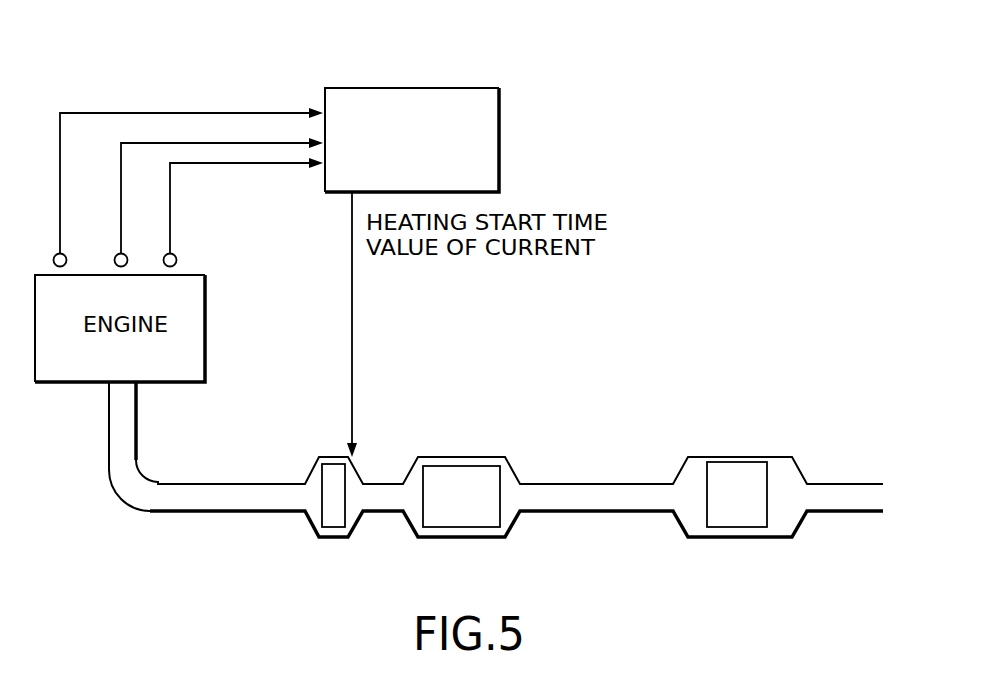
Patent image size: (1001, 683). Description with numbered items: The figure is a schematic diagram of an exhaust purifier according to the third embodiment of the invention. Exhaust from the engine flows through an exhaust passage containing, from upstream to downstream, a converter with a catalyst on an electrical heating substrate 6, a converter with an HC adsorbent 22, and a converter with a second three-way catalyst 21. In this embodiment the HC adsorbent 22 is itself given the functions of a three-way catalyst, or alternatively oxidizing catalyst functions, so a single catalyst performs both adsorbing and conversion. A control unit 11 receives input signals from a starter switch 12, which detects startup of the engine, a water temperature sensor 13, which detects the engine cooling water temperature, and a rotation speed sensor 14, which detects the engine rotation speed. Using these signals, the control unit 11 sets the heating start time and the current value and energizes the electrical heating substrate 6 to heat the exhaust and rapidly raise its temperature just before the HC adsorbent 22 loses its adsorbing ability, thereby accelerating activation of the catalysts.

The electrical heating substrate 6 is at (333, 522).
The control unit 11 is at (499, 123).
The starter switch 12 is at (176, 258).
The water temperature sensor 13 is at (124, 254).
The rotation speed sensor 14 is at (58, 254).
The second three-way catalyst 21 is at (742, 520).
The HC adsorbent 22 is at (460, 523).